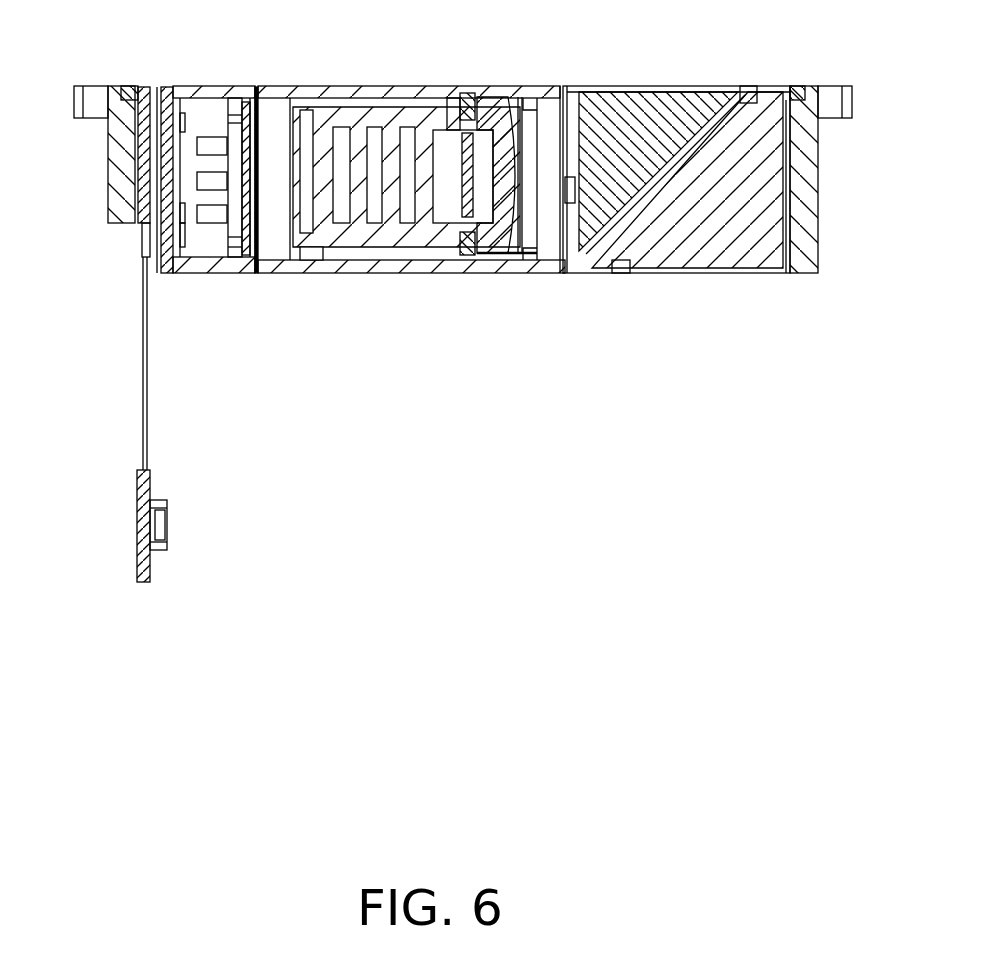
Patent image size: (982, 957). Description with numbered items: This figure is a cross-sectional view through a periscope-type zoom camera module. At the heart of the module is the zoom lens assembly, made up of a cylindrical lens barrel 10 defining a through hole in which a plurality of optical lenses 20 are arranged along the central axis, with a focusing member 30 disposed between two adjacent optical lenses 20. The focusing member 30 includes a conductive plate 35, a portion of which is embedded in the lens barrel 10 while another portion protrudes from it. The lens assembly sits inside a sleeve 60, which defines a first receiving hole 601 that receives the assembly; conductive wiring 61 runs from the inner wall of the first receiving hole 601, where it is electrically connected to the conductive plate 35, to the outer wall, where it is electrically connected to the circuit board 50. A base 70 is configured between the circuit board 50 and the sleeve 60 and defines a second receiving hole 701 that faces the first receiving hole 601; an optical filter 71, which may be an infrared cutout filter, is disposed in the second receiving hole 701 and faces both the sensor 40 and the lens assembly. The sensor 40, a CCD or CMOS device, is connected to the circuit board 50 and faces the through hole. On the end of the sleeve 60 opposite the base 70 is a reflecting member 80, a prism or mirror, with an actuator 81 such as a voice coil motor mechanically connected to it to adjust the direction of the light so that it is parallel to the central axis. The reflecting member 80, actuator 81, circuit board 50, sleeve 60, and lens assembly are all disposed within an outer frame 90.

The lens barrel 10 is at (418, 235).
The optical lenses 20 is at (390, 160).
The focusing member 30 is at (477, 180).
The conductive plate 35 is at (460, 103).
The sensor 40 is at (163, 177).
The circuit board 50 is at (143, 375).
The sleeve 60 is at (372, 260).
The first receiving hole 601 is at (310, 258).
The conductive wiring 61 is at (453, 105).
The base 70 is at (222, 92).
The second receiving hole 701 is at (237, 157).
The optical filter 71 is at (253, 170).
The reflecting member 80 is at (637, 117).
The actuator 81 is at (697, 230).
The outer frame 90 is at (122, 140).